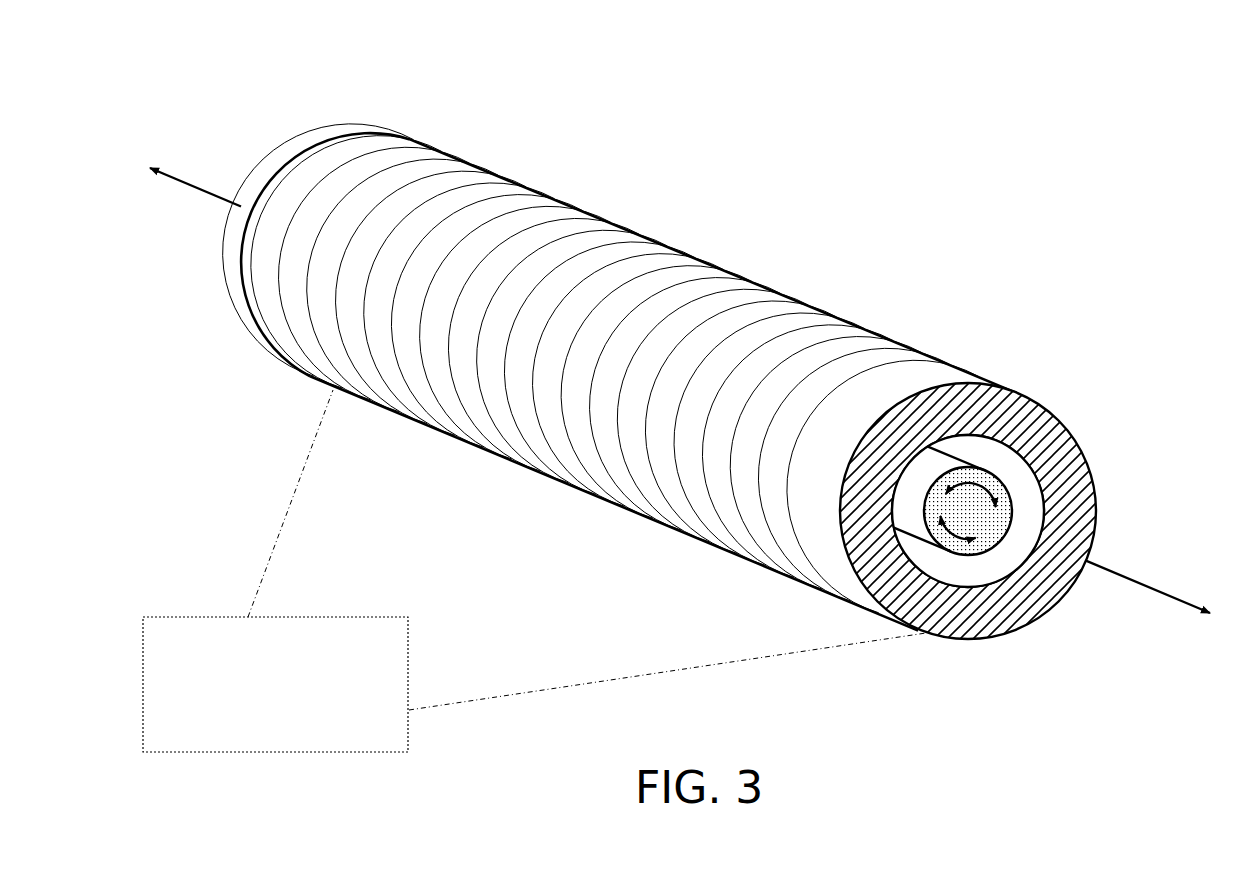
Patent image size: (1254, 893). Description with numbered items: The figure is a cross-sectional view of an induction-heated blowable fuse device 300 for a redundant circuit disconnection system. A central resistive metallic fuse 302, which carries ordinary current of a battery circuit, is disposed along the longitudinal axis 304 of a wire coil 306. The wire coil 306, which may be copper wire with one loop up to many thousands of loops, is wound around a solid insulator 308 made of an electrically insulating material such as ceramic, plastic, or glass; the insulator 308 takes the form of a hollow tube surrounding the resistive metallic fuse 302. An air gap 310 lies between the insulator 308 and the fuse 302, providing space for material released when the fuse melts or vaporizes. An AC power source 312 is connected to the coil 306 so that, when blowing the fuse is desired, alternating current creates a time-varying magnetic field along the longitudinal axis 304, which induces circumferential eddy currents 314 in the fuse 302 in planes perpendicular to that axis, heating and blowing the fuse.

The induction-heated blowable fuse device 300 is at (676, 393).
The central resistive metallic fuse 302 is at (1010, 487).
The longitudinal axis 304 is at (192, 184).
The wire coil 306 is at (676, 245).
The solid insulator 308 is at (1033, 433).
The air gap 310 is at (950, 565).
The AC power source 312 is at (208, 617).
The eddy currents 314 is at (933, 483).